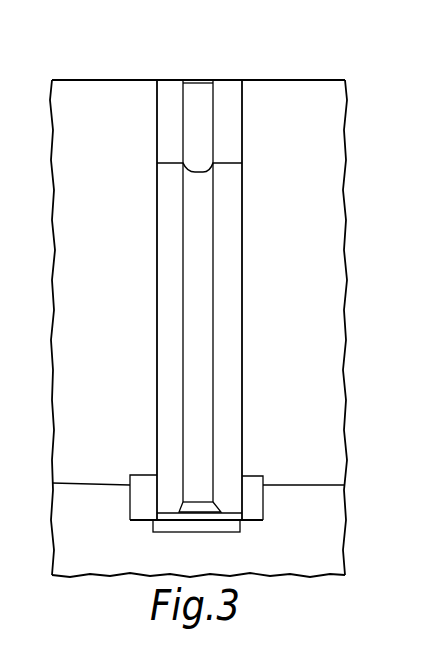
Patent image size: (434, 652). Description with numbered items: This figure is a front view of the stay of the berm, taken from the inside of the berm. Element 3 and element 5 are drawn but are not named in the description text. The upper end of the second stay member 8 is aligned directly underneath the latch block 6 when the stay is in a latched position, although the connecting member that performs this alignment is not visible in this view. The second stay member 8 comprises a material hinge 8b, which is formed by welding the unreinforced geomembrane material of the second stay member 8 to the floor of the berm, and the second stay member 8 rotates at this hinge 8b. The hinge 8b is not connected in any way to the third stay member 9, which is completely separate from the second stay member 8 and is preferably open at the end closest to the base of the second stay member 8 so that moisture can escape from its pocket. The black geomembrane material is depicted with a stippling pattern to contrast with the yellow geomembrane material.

The first layer of substrate 3 is at (320, 231).
The inner pipe 5 is at (184, 78).
The latch block 6 is at (205, 118).
The second stay member 8 is at (230, 326).
The material hinge 8b is at (246, 500).
The third stay member 9 is at (243, 513).